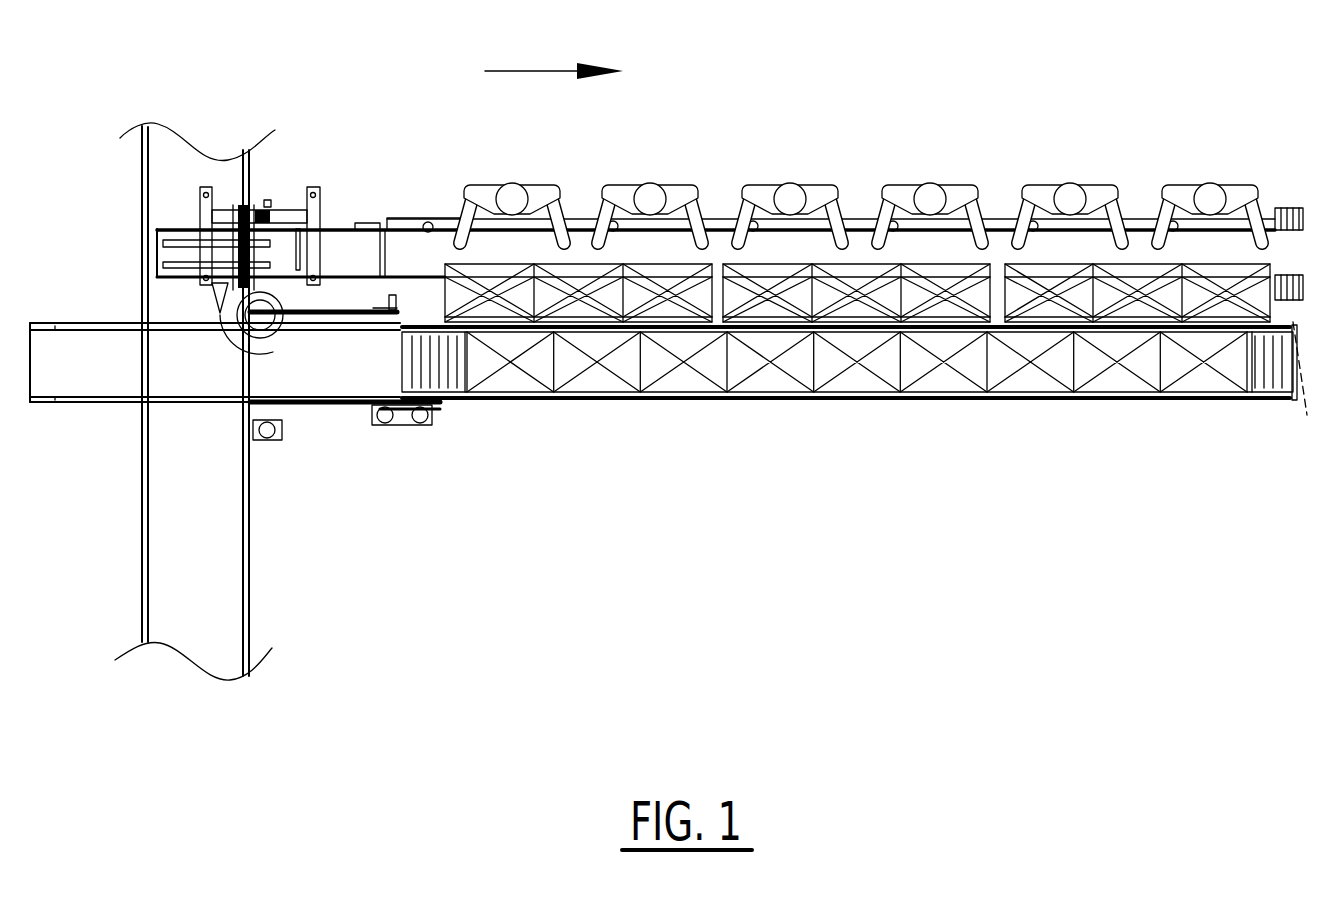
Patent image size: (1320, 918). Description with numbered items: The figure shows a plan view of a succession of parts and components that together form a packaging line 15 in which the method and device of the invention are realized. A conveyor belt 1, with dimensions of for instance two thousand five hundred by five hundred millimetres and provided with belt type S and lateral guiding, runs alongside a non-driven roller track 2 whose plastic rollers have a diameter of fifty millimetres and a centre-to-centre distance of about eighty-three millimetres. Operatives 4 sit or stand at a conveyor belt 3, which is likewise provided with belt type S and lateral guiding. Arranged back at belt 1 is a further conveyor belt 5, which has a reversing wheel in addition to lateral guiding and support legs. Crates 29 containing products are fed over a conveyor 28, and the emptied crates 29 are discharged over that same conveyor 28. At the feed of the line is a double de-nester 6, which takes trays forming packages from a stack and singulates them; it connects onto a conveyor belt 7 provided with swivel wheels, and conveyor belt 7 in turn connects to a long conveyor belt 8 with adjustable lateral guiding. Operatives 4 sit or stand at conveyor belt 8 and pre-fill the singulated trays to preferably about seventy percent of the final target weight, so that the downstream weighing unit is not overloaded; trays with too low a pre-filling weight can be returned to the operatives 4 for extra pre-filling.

The conveyor belt 1 is at (98, 390).
The non-driven roller track 2 is at (603, 380).
The conveyor belt 3 is at (427, 302).
The operatives 4 is at (540, 187).
The conveyor belt 5 is at (315, 407).
The double de-nester 6 is at (284, 169).
The conveyor belt 7 is at (355, 247).
The conveyor belt 8 is at (427, 247).
The packaging line 15 is at (544, 53).
The conveyor 28 is at (175, 533).
The crates 29 is at (678, 330).